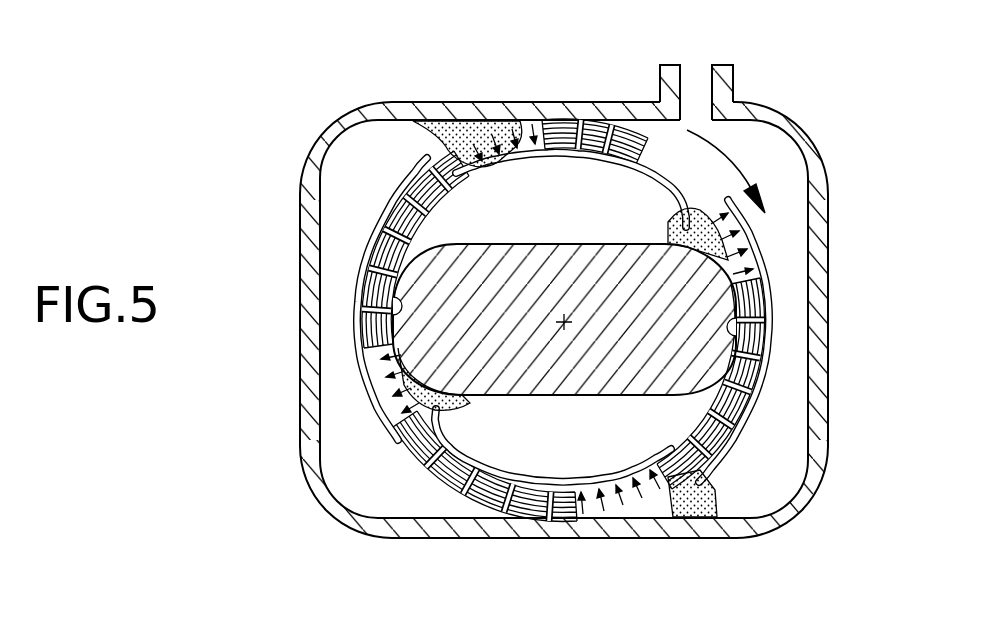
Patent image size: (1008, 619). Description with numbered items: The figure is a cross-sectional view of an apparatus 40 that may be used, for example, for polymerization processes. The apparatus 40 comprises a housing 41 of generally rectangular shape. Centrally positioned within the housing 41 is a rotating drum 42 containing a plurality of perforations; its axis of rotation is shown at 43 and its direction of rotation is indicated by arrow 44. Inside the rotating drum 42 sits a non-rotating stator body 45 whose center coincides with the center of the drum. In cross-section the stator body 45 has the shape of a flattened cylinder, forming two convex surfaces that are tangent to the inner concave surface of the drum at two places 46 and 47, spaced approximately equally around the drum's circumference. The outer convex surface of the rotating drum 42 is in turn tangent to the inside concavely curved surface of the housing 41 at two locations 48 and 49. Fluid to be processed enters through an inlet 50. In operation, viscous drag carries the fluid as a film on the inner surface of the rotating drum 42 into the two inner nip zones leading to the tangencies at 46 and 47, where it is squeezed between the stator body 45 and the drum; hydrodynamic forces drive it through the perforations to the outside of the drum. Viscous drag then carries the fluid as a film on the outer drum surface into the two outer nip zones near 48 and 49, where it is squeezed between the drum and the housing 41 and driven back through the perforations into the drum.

The apparatus 40 is at (368, 86).
The housing 41 is at (300, 262).
The rotating drum 42 is at (407, 193).
The axis of rotation 43 is at (566, 323).
The arrow 44 is at (730, 153).
The stator body 45 is at (470, 465).
The tangency place 46 is at (393, 308).
The tangency place 47 is at (770, 325).
The tangency location 48 is at (493, 120).
The tangency location 49 is at (713, 498).
The inlet 50 is at (698, 74).